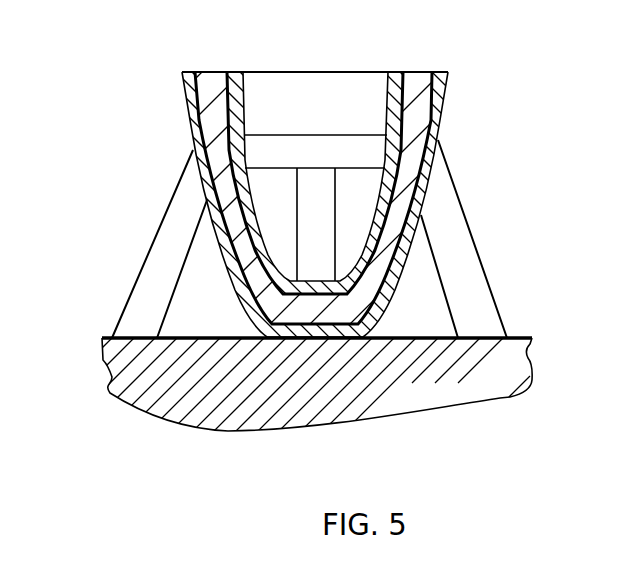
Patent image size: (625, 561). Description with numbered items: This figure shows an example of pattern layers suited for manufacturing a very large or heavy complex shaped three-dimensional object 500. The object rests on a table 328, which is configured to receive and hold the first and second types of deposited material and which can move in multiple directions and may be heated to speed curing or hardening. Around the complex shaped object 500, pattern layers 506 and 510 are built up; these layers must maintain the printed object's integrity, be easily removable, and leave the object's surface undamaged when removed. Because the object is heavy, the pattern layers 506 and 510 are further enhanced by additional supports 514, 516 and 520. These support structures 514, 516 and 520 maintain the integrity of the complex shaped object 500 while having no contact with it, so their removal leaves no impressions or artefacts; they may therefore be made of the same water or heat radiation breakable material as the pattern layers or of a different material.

The complex shaped 3D object 500 is at (312, 179).
The pattern layer 506 is at (188, 128).
The pattern layer 510 is at (445, 100).
The support structure 520 is at (275, 135).
The support structure 514 is at (167, 252).
The support structure 516 is at (462, 258).
The table 328 is at (111, 378).